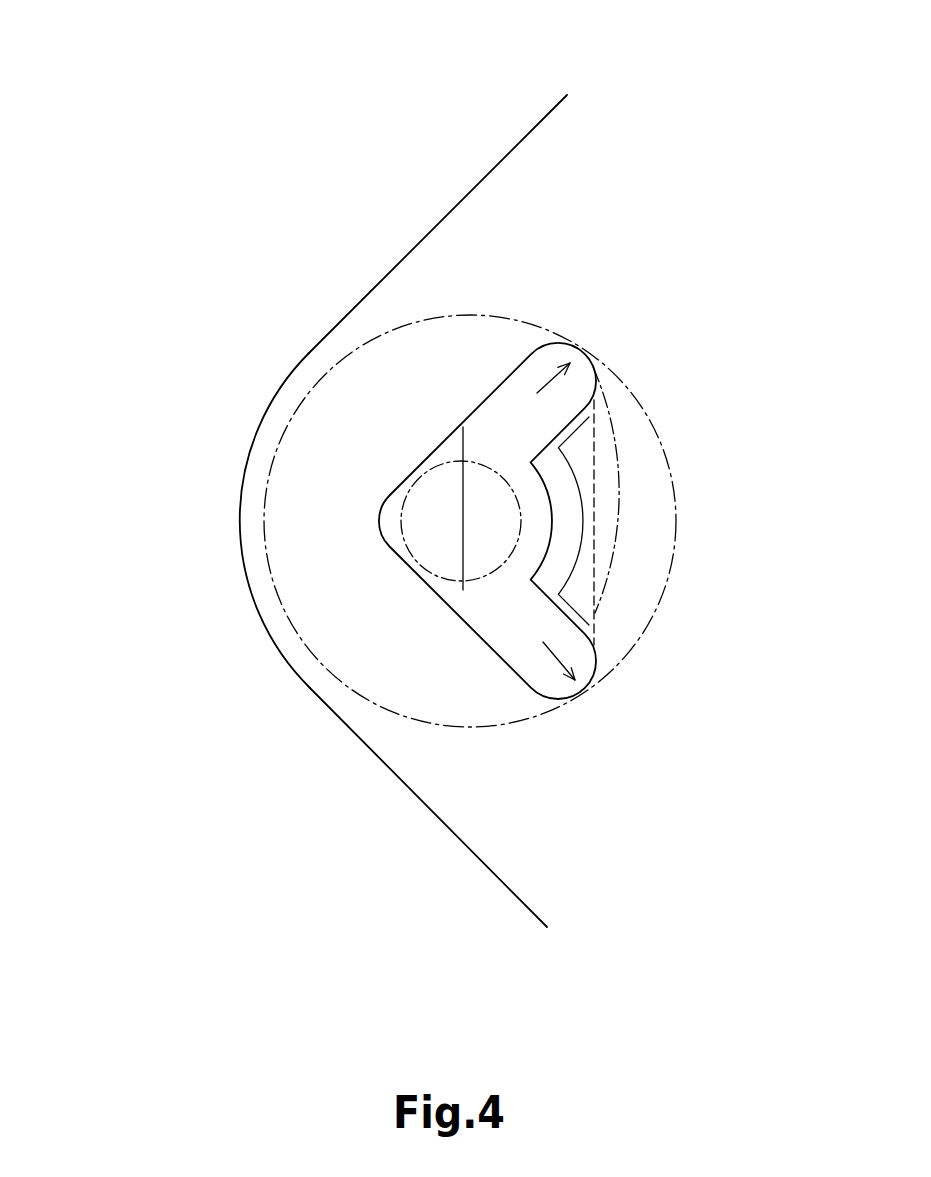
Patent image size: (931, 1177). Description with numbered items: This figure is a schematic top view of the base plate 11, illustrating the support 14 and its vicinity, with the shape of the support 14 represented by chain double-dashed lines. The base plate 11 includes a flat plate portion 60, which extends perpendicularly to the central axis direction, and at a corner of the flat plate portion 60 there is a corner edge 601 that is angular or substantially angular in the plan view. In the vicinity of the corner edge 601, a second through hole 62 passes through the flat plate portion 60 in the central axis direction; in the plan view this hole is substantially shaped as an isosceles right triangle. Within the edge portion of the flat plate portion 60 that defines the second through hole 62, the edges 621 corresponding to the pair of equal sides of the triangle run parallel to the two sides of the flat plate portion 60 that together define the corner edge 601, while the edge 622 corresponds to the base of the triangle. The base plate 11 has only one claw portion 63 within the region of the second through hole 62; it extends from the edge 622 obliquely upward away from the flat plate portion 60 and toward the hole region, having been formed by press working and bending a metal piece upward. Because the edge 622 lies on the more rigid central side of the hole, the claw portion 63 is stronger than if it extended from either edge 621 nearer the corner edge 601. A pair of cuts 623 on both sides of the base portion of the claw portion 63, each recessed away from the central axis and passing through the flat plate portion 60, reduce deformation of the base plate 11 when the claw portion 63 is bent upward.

The base plate 11 is at (490, 148).
The support 14 is at (307, 393).
The flat plate portion 60 is at (336, 497).
The corner edge 601 is at (240, 521).
The second through hole 62 is at (527, 488).
The edges 621 is at (461, 508).
The edge 622 is at (598, 470).
The cuts 623 is at (533, 521).
The claw portion 63 is at (603, 513).